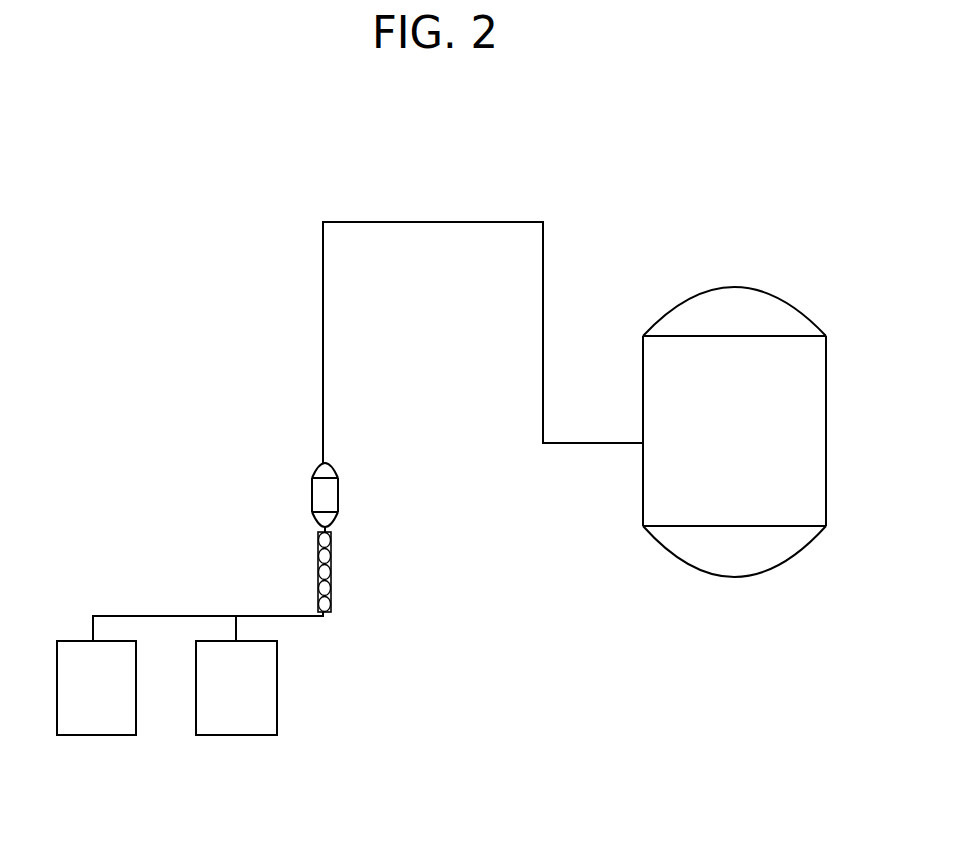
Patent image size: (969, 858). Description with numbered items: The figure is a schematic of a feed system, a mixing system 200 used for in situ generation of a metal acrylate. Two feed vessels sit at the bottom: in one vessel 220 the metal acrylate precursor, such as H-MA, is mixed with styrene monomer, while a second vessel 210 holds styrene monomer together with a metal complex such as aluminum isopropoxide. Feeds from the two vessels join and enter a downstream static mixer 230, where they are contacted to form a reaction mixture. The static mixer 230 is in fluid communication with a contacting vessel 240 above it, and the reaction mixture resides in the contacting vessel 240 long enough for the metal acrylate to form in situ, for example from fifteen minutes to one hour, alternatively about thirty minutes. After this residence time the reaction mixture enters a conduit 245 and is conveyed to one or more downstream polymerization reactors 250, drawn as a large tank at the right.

The mixing system 200 is at (207, 208).
The second vessel 210 is at (277, 686).
The vessel 220 is at (97, 735).
The static mixer 230 is at (331, 585).
The contacting vessel 240 is at (338, 495).
The conduit 245 is at (543, 245).
The polymerization reactor 250 is at (765, 287).